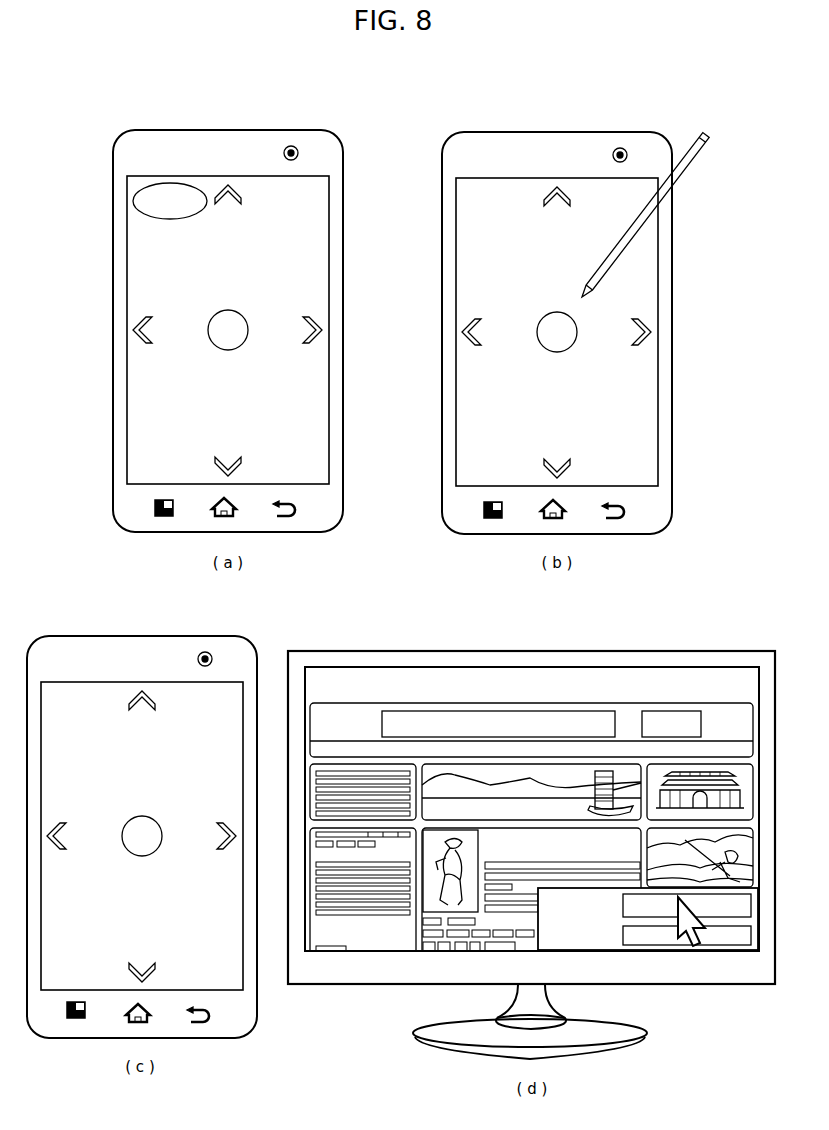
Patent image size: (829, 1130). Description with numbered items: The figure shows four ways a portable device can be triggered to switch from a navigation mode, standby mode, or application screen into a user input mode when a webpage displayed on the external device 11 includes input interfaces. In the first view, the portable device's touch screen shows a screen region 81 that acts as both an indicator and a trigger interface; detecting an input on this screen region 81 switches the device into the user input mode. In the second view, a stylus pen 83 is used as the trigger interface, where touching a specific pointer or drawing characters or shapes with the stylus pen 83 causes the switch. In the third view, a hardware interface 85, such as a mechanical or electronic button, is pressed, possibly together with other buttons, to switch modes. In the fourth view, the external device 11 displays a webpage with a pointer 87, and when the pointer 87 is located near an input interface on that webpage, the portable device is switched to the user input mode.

The external device 11 is at (531, 845).
The screen region 81 is at (147, 216).
The stylus pen 83 is at (686, 170).
The hardware interface 85 is at (78, 1018).
The pointer 87 is at (684, 938).